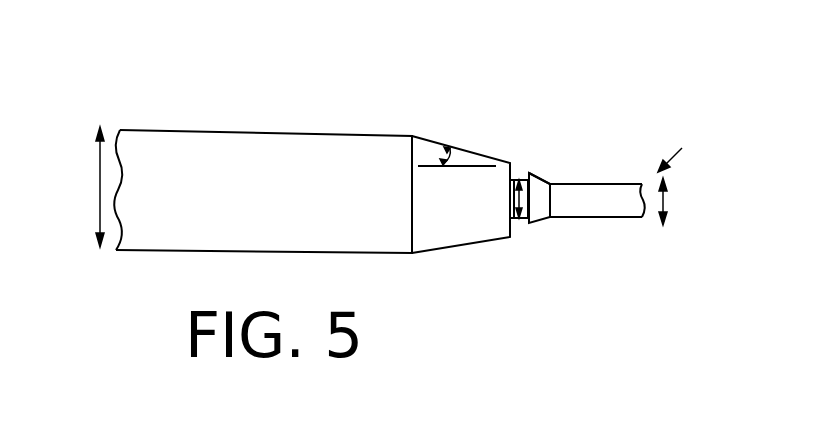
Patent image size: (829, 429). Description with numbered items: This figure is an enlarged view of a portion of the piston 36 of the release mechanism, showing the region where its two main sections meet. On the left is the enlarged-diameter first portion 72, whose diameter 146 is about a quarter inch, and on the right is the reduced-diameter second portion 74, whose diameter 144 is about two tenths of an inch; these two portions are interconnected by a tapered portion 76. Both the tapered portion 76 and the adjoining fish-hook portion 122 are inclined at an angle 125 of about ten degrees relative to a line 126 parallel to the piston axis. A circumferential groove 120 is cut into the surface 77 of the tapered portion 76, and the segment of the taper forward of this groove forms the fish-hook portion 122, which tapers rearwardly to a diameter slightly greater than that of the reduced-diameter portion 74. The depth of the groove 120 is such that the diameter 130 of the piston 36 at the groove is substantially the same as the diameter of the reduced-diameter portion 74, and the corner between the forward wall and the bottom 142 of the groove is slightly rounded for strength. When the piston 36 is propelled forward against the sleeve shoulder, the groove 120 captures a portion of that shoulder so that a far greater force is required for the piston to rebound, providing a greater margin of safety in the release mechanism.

The piston 36 is at (678, 145).
The enlarged-diameter first portion 72 is at (278, 147).
The reduced-diameter second portion 74 is at (622, 219).
The tapered portion 76 is at (538, 224).
The surface of the piston tapered portion 77 is at (498, 236).
The circumferential groove 120 is at (519, 220).
The fish-hook portion 122 is at (542, 192).
The taper angle 125 is at (434, 147).
The line parallel to the piston axis 126 is at (468, 165).
The diameter of the piston at the groove 130 is at (513, 198).
The bottom of the groove 142 is at (520, 177).
The diameter of the reduced-diameter portion 144 is at (666, 202).
The diameter of the enlarged-diameter portion 146 is at (100, 180).